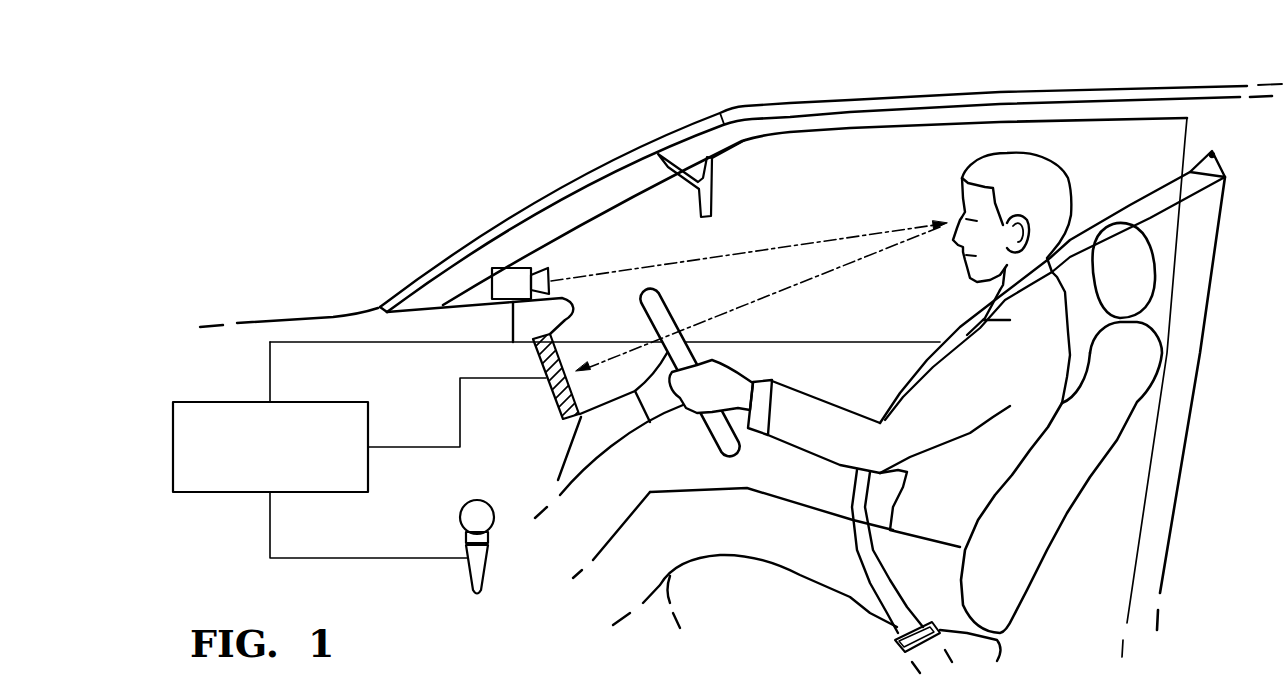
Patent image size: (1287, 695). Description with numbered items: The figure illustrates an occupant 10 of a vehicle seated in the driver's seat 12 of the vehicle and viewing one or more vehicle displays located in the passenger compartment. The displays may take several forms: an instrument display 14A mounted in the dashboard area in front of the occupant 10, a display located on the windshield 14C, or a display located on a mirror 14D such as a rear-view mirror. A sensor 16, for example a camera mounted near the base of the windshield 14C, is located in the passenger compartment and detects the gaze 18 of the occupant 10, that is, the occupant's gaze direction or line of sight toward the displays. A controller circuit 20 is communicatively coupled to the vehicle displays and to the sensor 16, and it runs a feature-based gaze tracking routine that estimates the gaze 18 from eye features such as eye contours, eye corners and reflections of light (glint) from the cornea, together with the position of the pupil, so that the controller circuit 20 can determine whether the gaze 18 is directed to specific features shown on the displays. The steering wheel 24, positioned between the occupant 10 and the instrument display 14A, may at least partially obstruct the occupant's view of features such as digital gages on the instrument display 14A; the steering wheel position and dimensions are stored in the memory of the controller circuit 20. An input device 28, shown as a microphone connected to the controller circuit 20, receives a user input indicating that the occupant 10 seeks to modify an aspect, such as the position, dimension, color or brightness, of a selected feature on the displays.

The occupant 10 is at (1047, 175).
The driver's seat 12 is at (1147, 340).
The instrument display 14A is at (554, 396).
The windshield 14C is at (588, 182).
The mirror 14D is at (747, 139).
The sensor 16 is at (514, 268).
The gaze 18 is at (777, 293).
The controller circuit 20 is at (193, 493).
The steering wheel 24 is at (733, 452).
The input device 28 is at (468, 578).